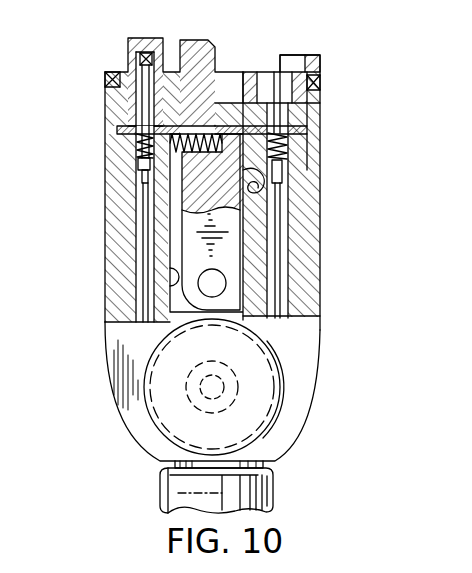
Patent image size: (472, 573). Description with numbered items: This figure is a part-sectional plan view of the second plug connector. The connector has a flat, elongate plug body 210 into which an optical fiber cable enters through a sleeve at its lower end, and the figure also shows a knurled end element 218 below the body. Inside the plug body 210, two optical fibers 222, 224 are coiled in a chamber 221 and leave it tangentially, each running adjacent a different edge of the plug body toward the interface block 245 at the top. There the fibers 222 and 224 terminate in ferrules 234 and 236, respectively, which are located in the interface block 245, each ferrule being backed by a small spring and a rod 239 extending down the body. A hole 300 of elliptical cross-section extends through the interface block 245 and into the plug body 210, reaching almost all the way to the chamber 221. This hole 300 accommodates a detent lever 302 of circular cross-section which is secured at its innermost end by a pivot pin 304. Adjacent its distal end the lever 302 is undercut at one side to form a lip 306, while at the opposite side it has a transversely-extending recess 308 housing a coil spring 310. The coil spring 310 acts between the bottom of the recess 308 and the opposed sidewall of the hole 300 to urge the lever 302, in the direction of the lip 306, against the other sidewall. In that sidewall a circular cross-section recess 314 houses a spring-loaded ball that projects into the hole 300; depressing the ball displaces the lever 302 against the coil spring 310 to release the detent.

The plug body 210 is at (106, 248).
The adjusting nut 218 is at (248, 489).
The chamber 221 is at (257, 401).
The optical fiber 222 is at (168, 270).
The optical fiber 224 is at (282, 238).
The ferrule 234 is at (140, 179).
The ferrule 236 is at (286, 150).
The plunger rod 239 is at (284, 162).
The interface block 245 is at (127, 68).
The hole 300 is at (172, 288).
The detent lever 302 is at (230, 261).
The pivot pin 304 is at (217, 283).
The lip 306 is at (220, 83).
The recess 308 is at (143, 203).
The coil spring 310 is at (170, 226).
The recess 314 is at (298, 204).